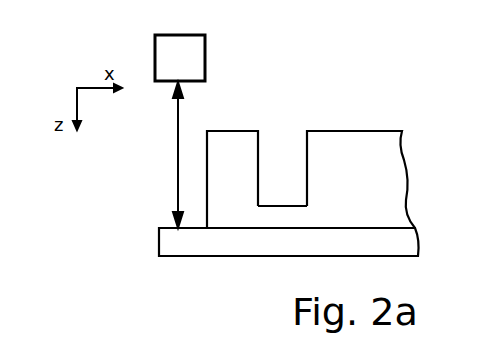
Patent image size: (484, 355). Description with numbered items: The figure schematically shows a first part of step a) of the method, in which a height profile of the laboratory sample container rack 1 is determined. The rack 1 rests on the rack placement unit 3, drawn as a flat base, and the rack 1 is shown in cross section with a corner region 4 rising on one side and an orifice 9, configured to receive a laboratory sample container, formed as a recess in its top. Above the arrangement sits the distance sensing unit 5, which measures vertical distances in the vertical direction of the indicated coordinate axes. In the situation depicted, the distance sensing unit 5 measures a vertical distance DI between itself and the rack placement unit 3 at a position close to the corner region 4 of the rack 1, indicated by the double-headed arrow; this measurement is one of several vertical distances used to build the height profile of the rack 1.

The laboratory sample container rack 1 is at (367, 145).
The rack placement unit 3 is at (159, 246).
The corner region 4 is at (230, 127).
The orifice 9 is at (285, 145).
The distance sensing unit 5 is at (180, 58).
The vertical distance DI is at (178, 151).